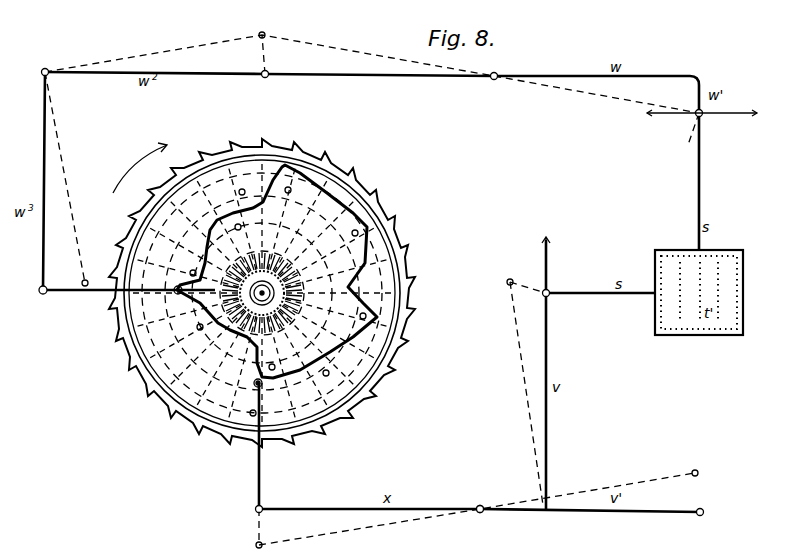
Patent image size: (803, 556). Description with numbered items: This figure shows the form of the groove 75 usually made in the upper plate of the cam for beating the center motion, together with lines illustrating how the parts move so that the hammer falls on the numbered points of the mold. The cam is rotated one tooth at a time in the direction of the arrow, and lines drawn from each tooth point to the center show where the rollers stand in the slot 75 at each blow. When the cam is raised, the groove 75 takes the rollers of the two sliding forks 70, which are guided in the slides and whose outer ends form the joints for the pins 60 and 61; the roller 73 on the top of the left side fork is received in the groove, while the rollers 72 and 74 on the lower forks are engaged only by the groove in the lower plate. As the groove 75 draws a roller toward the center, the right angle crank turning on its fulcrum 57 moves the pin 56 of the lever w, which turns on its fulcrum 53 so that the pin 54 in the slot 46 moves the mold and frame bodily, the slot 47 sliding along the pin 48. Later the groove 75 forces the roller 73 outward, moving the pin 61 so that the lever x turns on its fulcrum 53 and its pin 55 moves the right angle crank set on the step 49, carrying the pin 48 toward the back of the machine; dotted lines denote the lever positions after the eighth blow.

The slot 46 is at (702, 104).
The slot 47 is at (555, 265).
The pin 48 is at (556, 300).
The step 49 is at (486, 500).
The fulcrum 53 is at (492, 292).
The pin 54 is at (710, 120).
The pin 55 is at (706, 504).
The pin 56 is at (266, 84).
The fulcrum 57 is at (49, 62).
The pin 60 is at (33, 294).
The pin 61 is at (250, 502).
The sliding fork 70 is at (171, 383).
The roller 72 is at (275, 375).
The roller 73 is at (250, 377).
The roller 74 is at (262, 293).
The slot or groove 75 is at (282, 271).